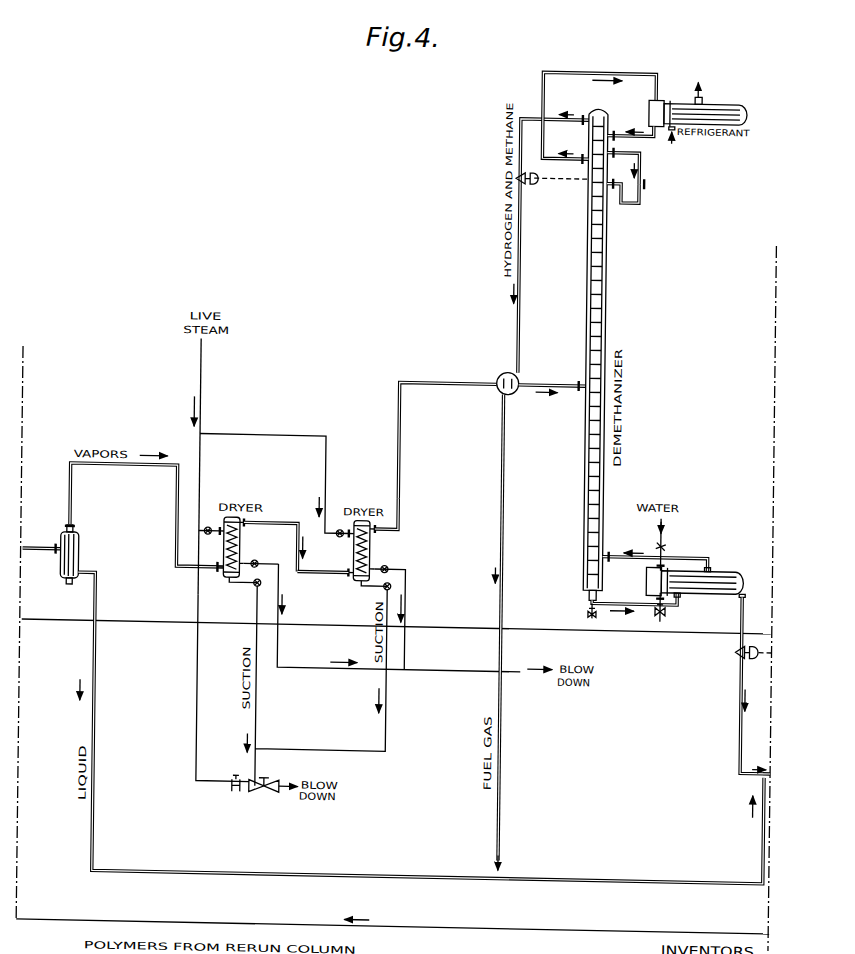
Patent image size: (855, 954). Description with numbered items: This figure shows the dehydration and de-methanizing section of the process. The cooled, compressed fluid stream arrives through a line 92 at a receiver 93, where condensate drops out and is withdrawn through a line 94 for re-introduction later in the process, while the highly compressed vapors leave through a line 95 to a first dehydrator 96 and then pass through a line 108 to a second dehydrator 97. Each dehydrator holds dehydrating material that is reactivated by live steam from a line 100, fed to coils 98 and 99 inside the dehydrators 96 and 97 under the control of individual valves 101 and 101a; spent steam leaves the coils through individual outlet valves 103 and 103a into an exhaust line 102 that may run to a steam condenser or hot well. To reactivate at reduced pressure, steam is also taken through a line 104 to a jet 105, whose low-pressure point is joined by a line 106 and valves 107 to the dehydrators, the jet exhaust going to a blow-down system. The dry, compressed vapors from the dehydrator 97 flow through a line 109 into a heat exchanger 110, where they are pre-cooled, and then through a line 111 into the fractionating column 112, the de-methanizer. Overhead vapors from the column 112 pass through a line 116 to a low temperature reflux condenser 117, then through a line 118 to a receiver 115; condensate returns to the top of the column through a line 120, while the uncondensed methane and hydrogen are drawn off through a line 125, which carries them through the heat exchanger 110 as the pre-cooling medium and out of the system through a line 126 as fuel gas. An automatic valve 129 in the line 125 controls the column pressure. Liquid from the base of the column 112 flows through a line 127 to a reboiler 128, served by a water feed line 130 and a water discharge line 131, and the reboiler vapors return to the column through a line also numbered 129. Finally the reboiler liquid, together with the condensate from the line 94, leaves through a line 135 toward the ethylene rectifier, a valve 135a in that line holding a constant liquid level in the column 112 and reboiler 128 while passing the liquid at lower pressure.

The line 92 is at (42, 560).
The receiver 93 is at (83, 561).
The line 94 is at (97, 678).
The line 95 is at (178, 520).
The first dehydrator 96 is at (256, 527).
The second dehydrator 97 is at (381, 534).
The coil 98 is at (225, 556).
The coil 99 is at (355, 560).
The line 100 is at (200, 370).
The valve 101 is at (209, 531).
The valve 101a is at (341, 531).
The exhaust line 102 is at (294, 671).
The valve 103 is at (259, 566).
The valve 103a is at (390, 569).
The line 104 is at (200, 745).
The jet 105 is at (266, 788).
The line 106 is at (259, 715).
The valves 107 is at (255, 590).
The line 108 is at (305, 578).
The line 109 is at (399, 440).
The heat exchanger 110 is at (510, 395).
The line 111 is at (549, 384).
The fractionating column 112 is at (604, 273).
The receiver 115 is at (608, 128).
The line 116 is at (552, 71).
The low temperature reflux condenser 117 is at (655, 97).
The line 118 is at (636, 165).
The line 120 is at (641, 182).
The line 125 is at (548, 121).
The line 126 is at (505, 559).
The line 127 is at (634, 603).
The reboiler 128 is at (737, 563).
The automatic valve 129 is at (522, 184).
The water feed line 130 is at (665, 541).
The water discharge line 131 is at (668, 609).
The line 135 is at (744, 735).
The valve 135a is at (750, 654).